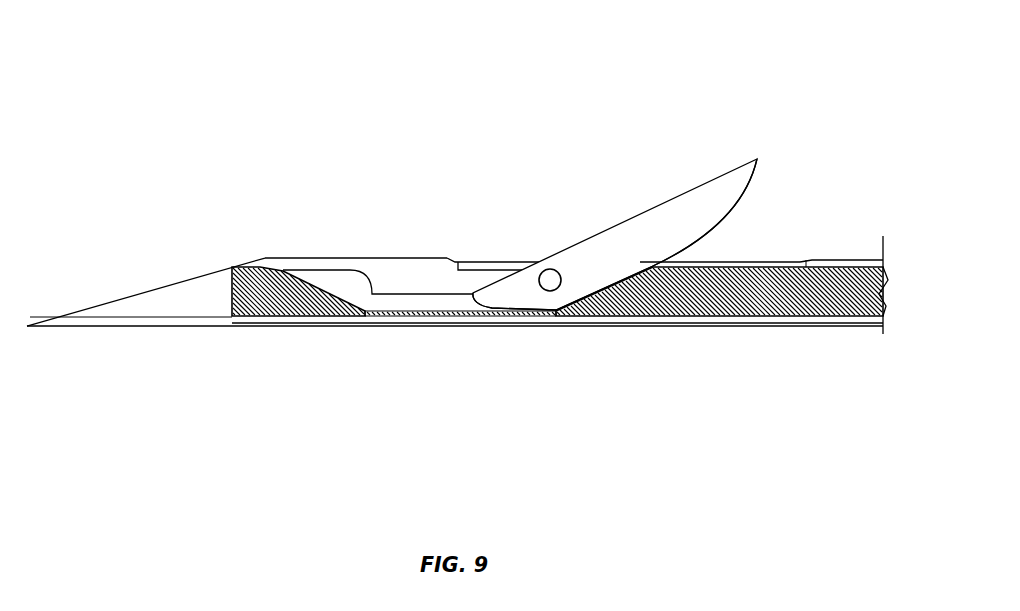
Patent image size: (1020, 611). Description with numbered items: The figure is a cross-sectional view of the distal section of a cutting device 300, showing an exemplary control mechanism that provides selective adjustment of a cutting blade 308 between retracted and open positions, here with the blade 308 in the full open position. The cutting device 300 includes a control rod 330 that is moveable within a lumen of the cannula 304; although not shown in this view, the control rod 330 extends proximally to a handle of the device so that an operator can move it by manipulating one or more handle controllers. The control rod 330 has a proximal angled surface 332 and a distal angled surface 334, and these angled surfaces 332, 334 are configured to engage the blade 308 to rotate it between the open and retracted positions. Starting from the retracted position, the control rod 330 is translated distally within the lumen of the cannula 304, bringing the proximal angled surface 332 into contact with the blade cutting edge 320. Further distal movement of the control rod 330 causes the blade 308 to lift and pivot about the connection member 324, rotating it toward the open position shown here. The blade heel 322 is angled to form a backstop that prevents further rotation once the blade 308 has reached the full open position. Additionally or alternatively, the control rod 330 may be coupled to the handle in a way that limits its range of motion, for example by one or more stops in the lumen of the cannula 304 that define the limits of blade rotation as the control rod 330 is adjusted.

The cutting device 300 is at (192, 78).
The cannula 304 is at (208, 288).
The cutting blade 308 is at (697, 197).
The blade cutting edge 320 is at (732, 214).
The blade heel 322 is at (506, 303).
The connection member 324 is at (548, 279).
The control rod 330 is at (756, 296).
The proximal angled surface 332 is at (598, 298).
The distal angled surface 334 is at (307, 283).